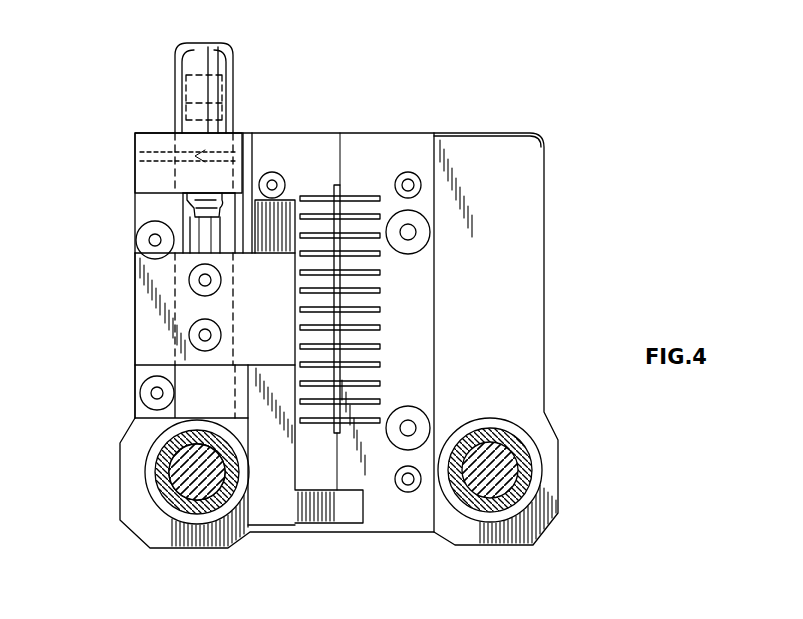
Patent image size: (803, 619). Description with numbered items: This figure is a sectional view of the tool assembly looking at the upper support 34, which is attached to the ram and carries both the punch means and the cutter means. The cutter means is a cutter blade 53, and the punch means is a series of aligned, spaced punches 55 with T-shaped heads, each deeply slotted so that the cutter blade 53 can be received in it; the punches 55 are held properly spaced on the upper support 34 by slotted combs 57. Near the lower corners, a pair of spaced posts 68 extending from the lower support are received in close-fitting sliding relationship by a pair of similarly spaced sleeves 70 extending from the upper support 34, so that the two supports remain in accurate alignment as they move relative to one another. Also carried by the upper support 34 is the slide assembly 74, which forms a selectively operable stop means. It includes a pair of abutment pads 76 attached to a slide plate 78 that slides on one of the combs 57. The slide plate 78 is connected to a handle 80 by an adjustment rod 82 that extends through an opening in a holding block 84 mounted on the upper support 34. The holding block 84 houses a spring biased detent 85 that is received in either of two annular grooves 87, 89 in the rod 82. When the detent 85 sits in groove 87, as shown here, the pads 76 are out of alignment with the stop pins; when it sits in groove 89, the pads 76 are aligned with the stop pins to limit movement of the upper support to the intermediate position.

The upper support 34 is at (512, 172).
The cutter blade 53 is at (338, 192).
The punches 55 is at (378, 273).
The slotted combs 57 is at (287, 143).
The posts 68 is at (177, 487).
The sleeves 70 is at (155, 470).
The slide assembly 74 is at (133, 298).
The abutment pads 76 is at (283, 208).
The slide plate 78 is at (153, 335).
The handle 80 is at (233, 57).
The adjustment rod 82 is at (173, 213).
The holding block 84 is at (153, 140).
The spring biased detent 85 is at (162, 160).
The annular groove 87 is at (258, 143).
The annular groove 89 is at (193, 232).